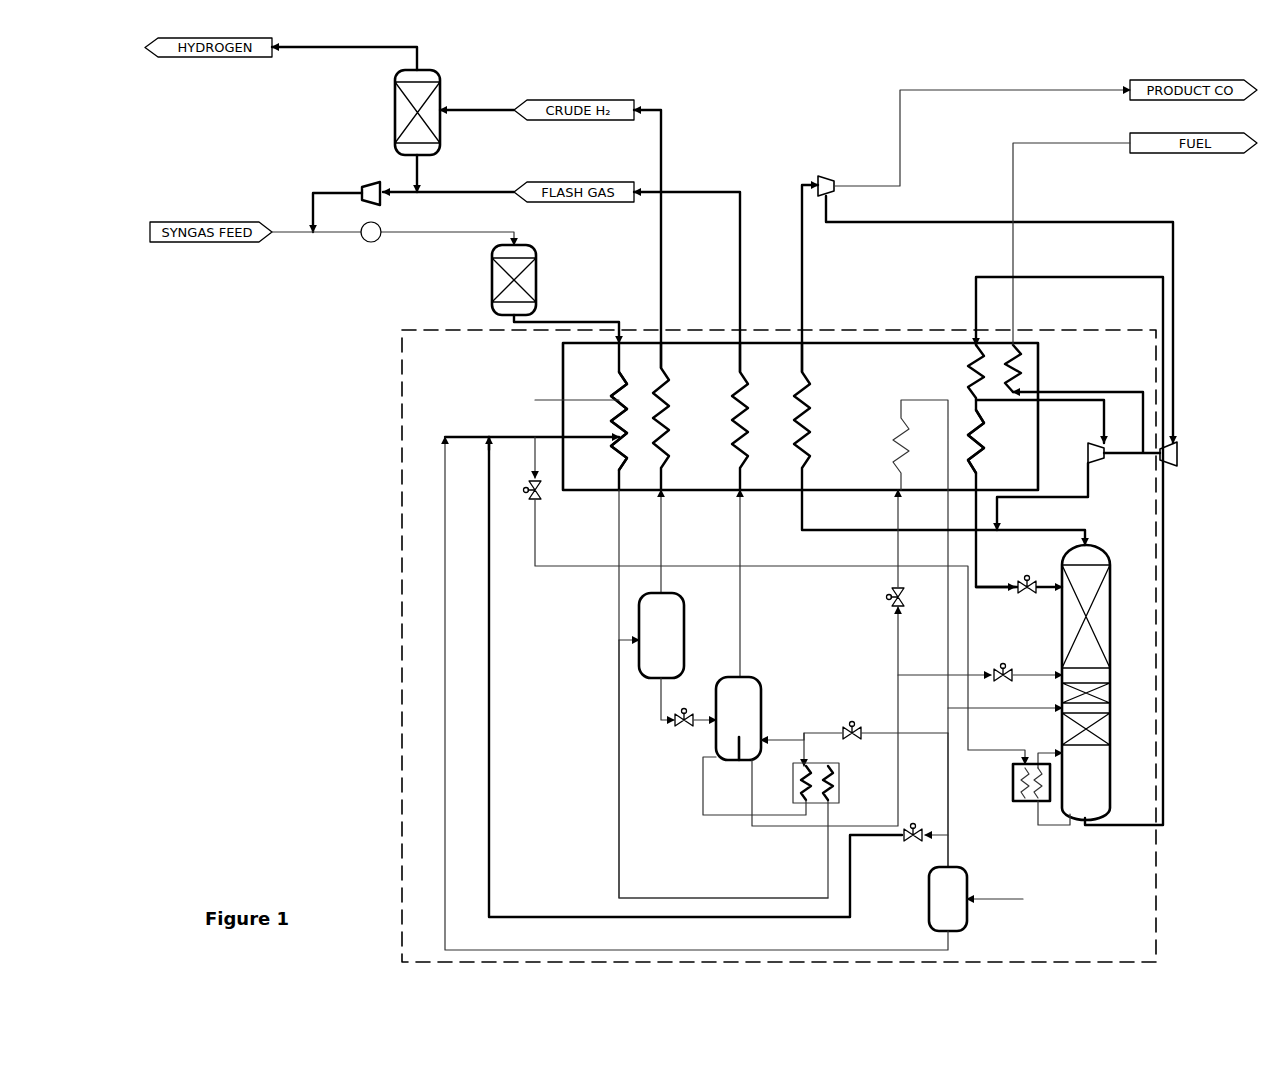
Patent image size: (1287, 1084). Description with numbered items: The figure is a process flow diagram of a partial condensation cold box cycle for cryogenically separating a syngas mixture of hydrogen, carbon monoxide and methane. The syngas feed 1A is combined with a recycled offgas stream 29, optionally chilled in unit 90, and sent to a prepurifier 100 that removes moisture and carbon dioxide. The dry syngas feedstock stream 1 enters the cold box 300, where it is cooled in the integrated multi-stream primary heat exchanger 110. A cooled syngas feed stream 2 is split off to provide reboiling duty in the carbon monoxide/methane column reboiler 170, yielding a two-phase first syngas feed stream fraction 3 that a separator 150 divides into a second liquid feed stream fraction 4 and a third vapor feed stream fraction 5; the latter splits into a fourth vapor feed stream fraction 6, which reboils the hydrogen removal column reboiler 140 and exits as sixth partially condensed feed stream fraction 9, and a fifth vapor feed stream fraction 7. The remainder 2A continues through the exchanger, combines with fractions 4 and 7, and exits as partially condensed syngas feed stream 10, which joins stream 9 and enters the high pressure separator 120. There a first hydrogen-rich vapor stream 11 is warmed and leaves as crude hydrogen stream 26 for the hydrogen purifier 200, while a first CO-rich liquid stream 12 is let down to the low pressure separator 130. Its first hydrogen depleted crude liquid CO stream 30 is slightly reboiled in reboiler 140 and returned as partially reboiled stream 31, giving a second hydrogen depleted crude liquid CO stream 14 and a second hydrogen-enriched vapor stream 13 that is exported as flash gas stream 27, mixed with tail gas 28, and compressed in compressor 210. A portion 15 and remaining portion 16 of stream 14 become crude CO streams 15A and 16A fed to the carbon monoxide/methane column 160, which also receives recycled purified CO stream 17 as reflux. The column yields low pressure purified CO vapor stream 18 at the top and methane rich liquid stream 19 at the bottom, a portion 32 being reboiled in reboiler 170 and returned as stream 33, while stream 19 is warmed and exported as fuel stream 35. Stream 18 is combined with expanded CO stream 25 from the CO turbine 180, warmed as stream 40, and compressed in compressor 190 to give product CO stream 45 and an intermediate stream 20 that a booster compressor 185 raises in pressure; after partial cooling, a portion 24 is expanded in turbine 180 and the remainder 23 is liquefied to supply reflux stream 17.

The dry syngas feedstock stream 1 is at (566, 323).
The syngas feed 1A is at (393, 242).
The cooled syngas feed stream 2 is at (532, 410).
The primary syngas feed stream remainder 2A is at (612, 400).
The first syngas feed stream fraction 3 is at (995, 872).
The second liquid feed stream fraction 4 is at (696, 693).
The third vapor feed stream fraction 5 is at (955, 800).
The fourth vapor feed stream fraction 6 is at (876, 738).
The fifth vapor feed stream fraction 7 is at (718, 677).
The sixth partially condensed feed stream fraction 9 is at (723, 769).
The partially condensed syngas feed stream 10 is at (775, 667).
The first hydrogen-rich vapor stream 11 is at (676, 541).
The first CO-rich liquid stream 12 is at (688, 702).
The second hydrogen-enriched vapor stream 13 is at (752, 583).
The second hydrogen depleted crude liquid CO stream 14 is at (825, 730).
The portion of second hydrogen-depleted crude liquid CO stream 15 is at (955, 666).
The crude CO stream 15A is at (1037, 663).
The remaining portion of second hydrogen-depleted crude liquid CO stream 16 is at (887, 564).
The crude CO stream 16A is at (1005, 719).
The recycled purified CO stream 17 is at (1006, 596).
The low pressure purified CO vapor stream 18 is at (1046, 538).
The methane rich liquid stream 19 is at (1069, 566).
The intermediate pressure CO stream 20 is at (1014, 319).
The remainder of partially cooled CO stream 23 is at (982, 410).
The partially cooled CO stream portion 24 is at (1040, 421).
The expanded CO stream 25 is at (1042, 496).
The crude hydrogen stream 26 is at (661, 239).
The flash gas stream 27 is at (699, 282).
The tail gas 28 is at (433, 173).
The recycled offgas stream 29 is at (332, 200).
The first hydrogen depleted crude liquid CO stream 30 is at (742, 786).
The partially reboiled stream 31 is at (782, 729).
The methane rich liquid portion 32 is at (1054, 827).
The reboiled return stream 33 is at (1048, 750).
The fuel stream 35 is at (1071, 244).
The warmed low pressure CO stream 40 is at (943, 365).
The product CO stream 45 is at (982, 125).
The chilling unit 90 is at (370, 244).
The prepurifier 100 is at (489, 283).
The primary heat exchanger 110 is at (800, 605).
The high pressure separator 120 is at (661, 635).
The low pressure separator 130 is at (738, 718).
The hydrogen removal column reboiler 140 is at (836, 780).
The separator 150 is at (948, 899).
The carbon monoxide/methane column 160 is at (1086, 682).
The carbon monoxide/methane column reboiler 170 is at (1012, 776).
The CO turbine 180 is at (1097, 467).
The booster compressor 185 is at (1181, 460).
The compressor 190 is at (827, 173).
The hydrogen purifier 200 is at (392, 128).
The compressor 210 is at (377, 182).
The cold box 300 is at (400, 440).